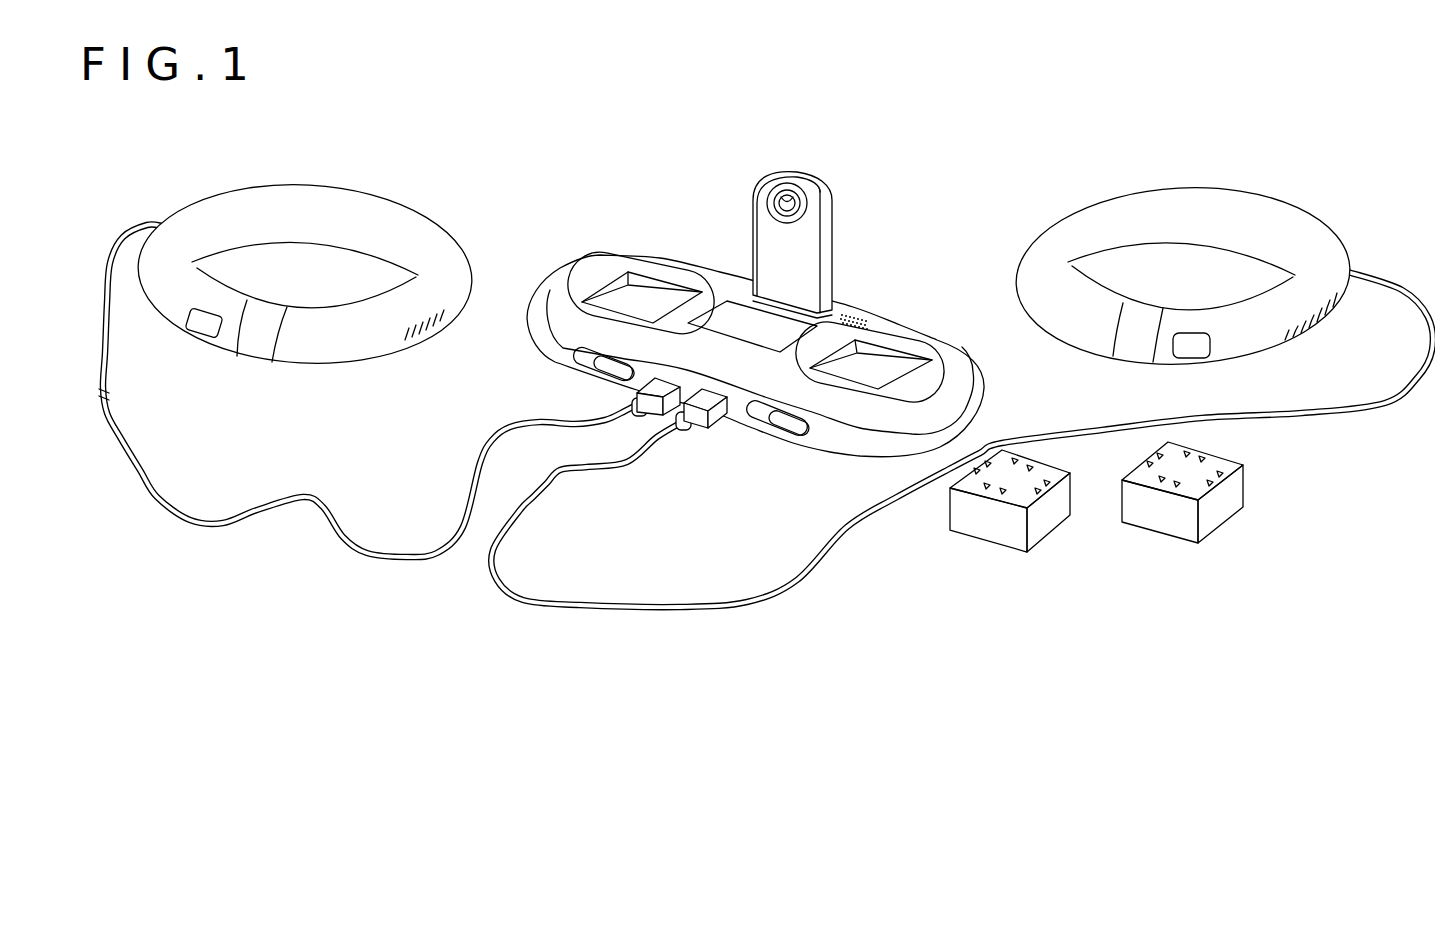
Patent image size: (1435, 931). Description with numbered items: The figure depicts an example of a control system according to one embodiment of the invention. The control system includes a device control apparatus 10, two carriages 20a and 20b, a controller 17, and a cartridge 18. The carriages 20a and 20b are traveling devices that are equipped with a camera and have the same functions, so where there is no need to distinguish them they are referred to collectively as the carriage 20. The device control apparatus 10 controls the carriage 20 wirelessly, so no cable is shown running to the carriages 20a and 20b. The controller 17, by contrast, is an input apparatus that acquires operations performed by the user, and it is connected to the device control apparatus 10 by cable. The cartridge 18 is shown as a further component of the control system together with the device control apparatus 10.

The device control apparatus 10 is at (597, 258).
The controller 17 is at (343, 205).
The cartridge 18 is at (818, 183).
The carriage 20 is at (1096, 550).
The carriage 20a is at (1012, 525).
The carriage 20b is at (1182, 528).